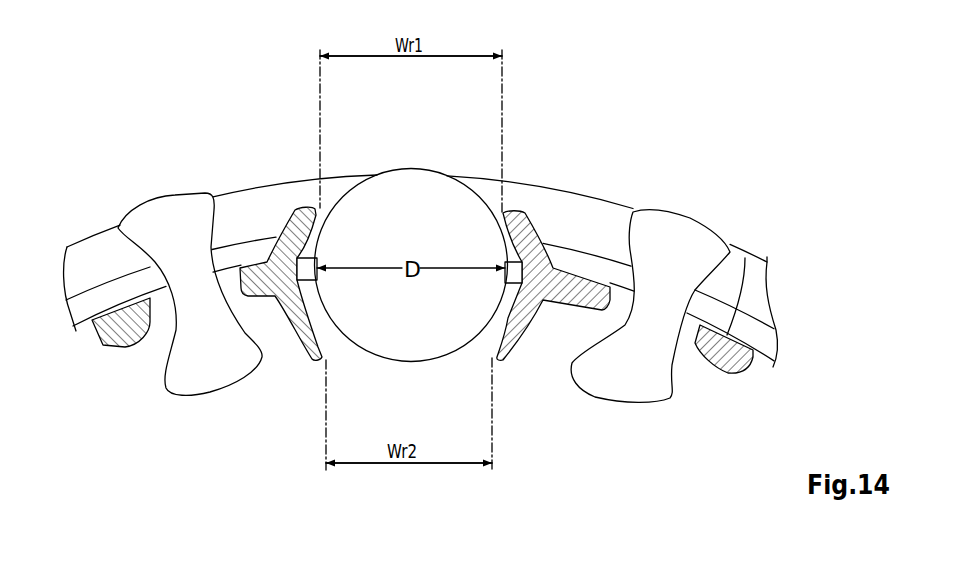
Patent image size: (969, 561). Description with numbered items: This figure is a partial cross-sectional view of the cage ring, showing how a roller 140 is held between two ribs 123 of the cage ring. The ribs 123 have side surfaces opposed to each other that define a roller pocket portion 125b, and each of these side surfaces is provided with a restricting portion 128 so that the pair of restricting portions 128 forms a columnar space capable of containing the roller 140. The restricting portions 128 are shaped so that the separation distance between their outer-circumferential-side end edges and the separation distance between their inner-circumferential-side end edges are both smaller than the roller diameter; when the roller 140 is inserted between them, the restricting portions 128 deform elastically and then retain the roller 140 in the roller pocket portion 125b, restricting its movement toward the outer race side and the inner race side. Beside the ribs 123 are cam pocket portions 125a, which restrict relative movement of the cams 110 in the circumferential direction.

The cam 110 is at (161, 222).
The rib 123 is at (236, 228).
The cam pocket portion 125a is at (164, 318).
The roller pocket portion 125b is at (493, 329).
The restricting portion 128 is at (285, 243).
The roller 140 is at (393, 185).